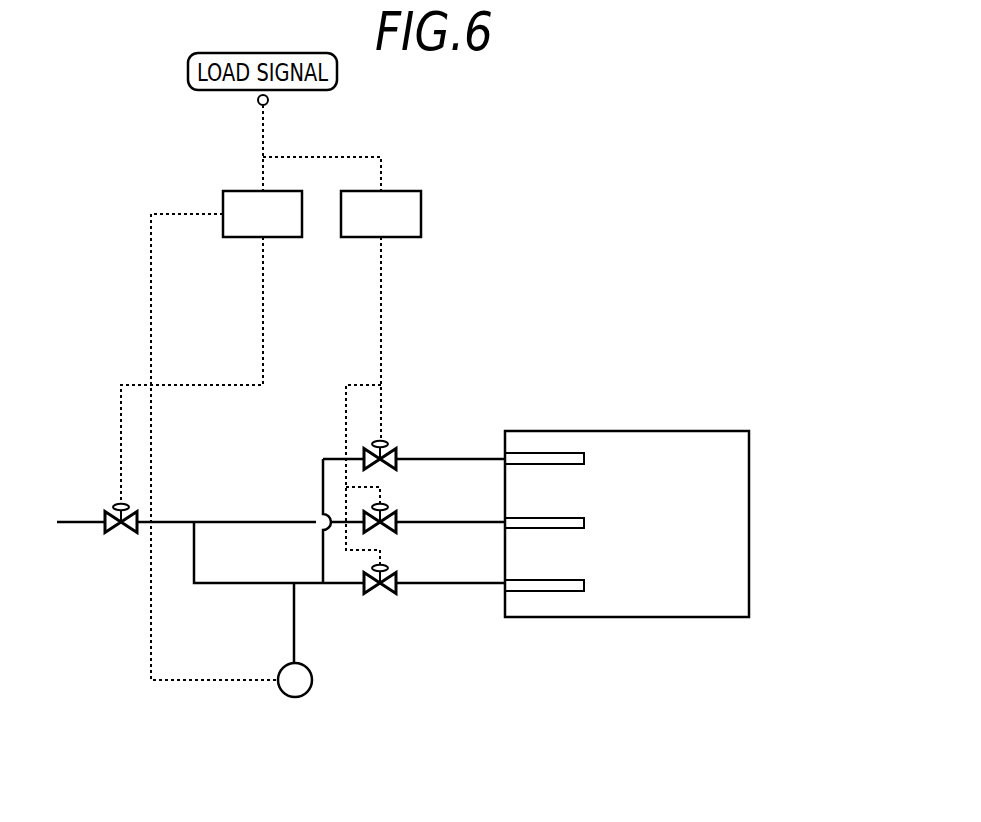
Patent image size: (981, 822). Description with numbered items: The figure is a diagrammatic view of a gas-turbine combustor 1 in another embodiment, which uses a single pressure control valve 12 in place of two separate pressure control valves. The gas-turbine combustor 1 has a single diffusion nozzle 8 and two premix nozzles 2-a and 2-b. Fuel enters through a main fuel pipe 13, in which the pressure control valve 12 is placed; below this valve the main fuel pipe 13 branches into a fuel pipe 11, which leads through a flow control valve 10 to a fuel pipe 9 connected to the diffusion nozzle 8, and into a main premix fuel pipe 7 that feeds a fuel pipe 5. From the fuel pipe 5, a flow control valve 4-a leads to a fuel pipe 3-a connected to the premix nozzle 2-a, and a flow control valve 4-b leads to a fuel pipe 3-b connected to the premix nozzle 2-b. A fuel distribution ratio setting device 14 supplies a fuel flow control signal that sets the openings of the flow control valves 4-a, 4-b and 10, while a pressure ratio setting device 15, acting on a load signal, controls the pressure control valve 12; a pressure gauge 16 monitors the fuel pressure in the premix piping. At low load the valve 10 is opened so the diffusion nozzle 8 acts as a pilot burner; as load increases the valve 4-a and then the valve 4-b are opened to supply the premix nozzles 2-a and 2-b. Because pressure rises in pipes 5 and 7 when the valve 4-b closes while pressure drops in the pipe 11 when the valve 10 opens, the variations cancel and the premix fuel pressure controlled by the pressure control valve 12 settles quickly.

The gas-turbine combustor 1 is at (697, 619).
The premix nozzle 2-a is at (584, 458).
The premix nozzle 2-b is at (584, 585).
The fuel pipe 3-a is at (471, 458).
The fuel pipe 3-b is at (453, 585).
The flow control valve 4-a is at (386, 444).
The flow control valve 4-b is at (380, 597).
The fuel pipe 5 is at (333, 585).
The main premix fuel pipe 7 is at (213, 585).
The diffusion nozzle 8 is at (584, 523).
The fuel pipe 9 is at (450, 520).
The flow control valve 10 is at (387, 508).
The fuel pipe 11 is at (285, 523).
The pressure control valve 12 is at (113, 506).
The main fuel pipe 13 is at (60, 523).
The fuel distribution ratio setting device 14 is at (421, 198).
The pressure ratio setting device 15 is at (226, 239).
The pressure gauge 16 is at (312, 680).